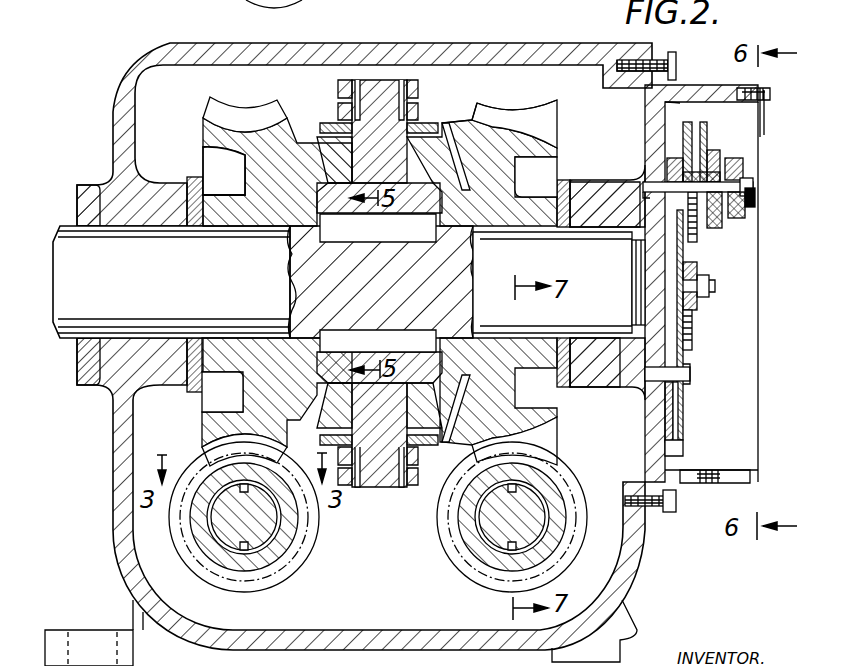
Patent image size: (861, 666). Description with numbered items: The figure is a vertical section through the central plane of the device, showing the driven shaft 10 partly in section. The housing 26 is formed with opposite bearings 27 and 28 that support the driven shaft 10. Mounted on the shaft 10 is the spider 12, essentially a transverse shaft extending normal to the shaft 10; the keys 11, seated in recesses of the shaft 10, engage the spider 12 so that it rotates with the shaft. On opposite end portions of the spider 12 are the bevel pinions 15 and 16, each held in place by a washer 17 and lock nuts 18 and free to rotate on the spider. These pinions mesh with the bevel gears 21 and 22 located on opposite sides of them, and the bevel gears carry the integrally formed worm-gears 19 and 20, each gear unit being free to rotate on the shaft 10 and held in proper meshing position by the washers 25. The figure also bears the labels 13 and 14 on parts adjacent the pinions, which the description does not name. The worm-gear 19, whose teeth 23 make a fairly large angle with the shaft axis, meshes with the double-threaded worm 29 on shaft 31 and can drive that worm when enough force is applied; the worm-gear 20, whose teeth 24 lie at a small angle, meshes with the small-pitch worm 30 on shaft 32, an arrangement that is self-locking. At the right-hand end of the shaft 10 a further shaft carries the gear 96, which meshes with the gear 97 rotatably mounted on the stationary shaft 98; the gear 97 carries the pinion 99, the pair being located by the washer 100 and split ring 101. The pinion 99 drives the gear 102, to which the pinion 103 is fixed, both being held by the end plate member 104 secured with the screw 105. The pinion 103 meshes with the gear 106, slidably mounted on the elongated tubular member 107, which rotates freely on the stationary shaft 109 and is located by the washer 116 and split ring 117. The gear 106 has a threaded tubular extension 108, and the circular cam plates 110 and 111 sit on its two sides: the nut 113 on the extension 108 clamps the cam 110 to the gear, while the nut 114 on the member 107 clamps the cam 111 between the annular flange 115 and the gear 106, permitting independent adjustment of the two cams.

The driven shaft 10 is at (95, 240).
The keys 11 is at (333, 330).
The spider 12 is at (380, 470).
The lower right gear 13 is at (460, 400).
The right gear 14 is at (458, 165).
The bevel pinion 15 is at (305, 395).
The bevel pinion 16 is at (328, 138).
The washer 17 is at (422, 448).
The lock nuts 18 is at (412, 97).
The worm-gear 19 is at (495, 167).
The worm-gear 20 is at (252, 167).
The bevel gear 21 is at (473, 123).
The bevel gear 22 is at (305, 135).
The teeth 23 is at (537, 110).
The teeth 24 is at (237, 443).
The washers 25 is at (577, 175).
The housing 26 is at (118, 486).
The bearing 27 is at (100, 391).
The bearing 28 is at (597, 386).
The worm 29 is at (473, 543).
The worm 30 is at (207, 480).
The shaft 31 is at (540, 520).
The shaft 32 is at (273, 540).
The gear 96 is at (678, 270).
The gear 97 is at (673, 440).
The stationary shaft 98 is at (657, 387).
The pinion 99 is at (683, 377).
The washer 100 is at (660, 380).
The split ring 101 is at (683, 387).
The gear 102 is at (687, 347).
The pinion 103 is at (690, 323).
The end plate member 104 is at (693, 300).
The screw 105 is at (698, 290).
The gear 106 is at (707, 288).
The elongated tubular member 107 is at (757, 187).
The threaded tubular extension 108 is at (747, 163).
The stationary shaft 109 is at (650, 187).
The circular cam plate 110 is at (710, 240).
The circular cam plate 111 is at (685, 133).
The nut 113 is at (720, 152).
The nut 114 is at (750, 230).
The annular flange 115 is at (717, 153).
The washer 116 is at (670, 163).
The split ring 117 is at (753, 202).